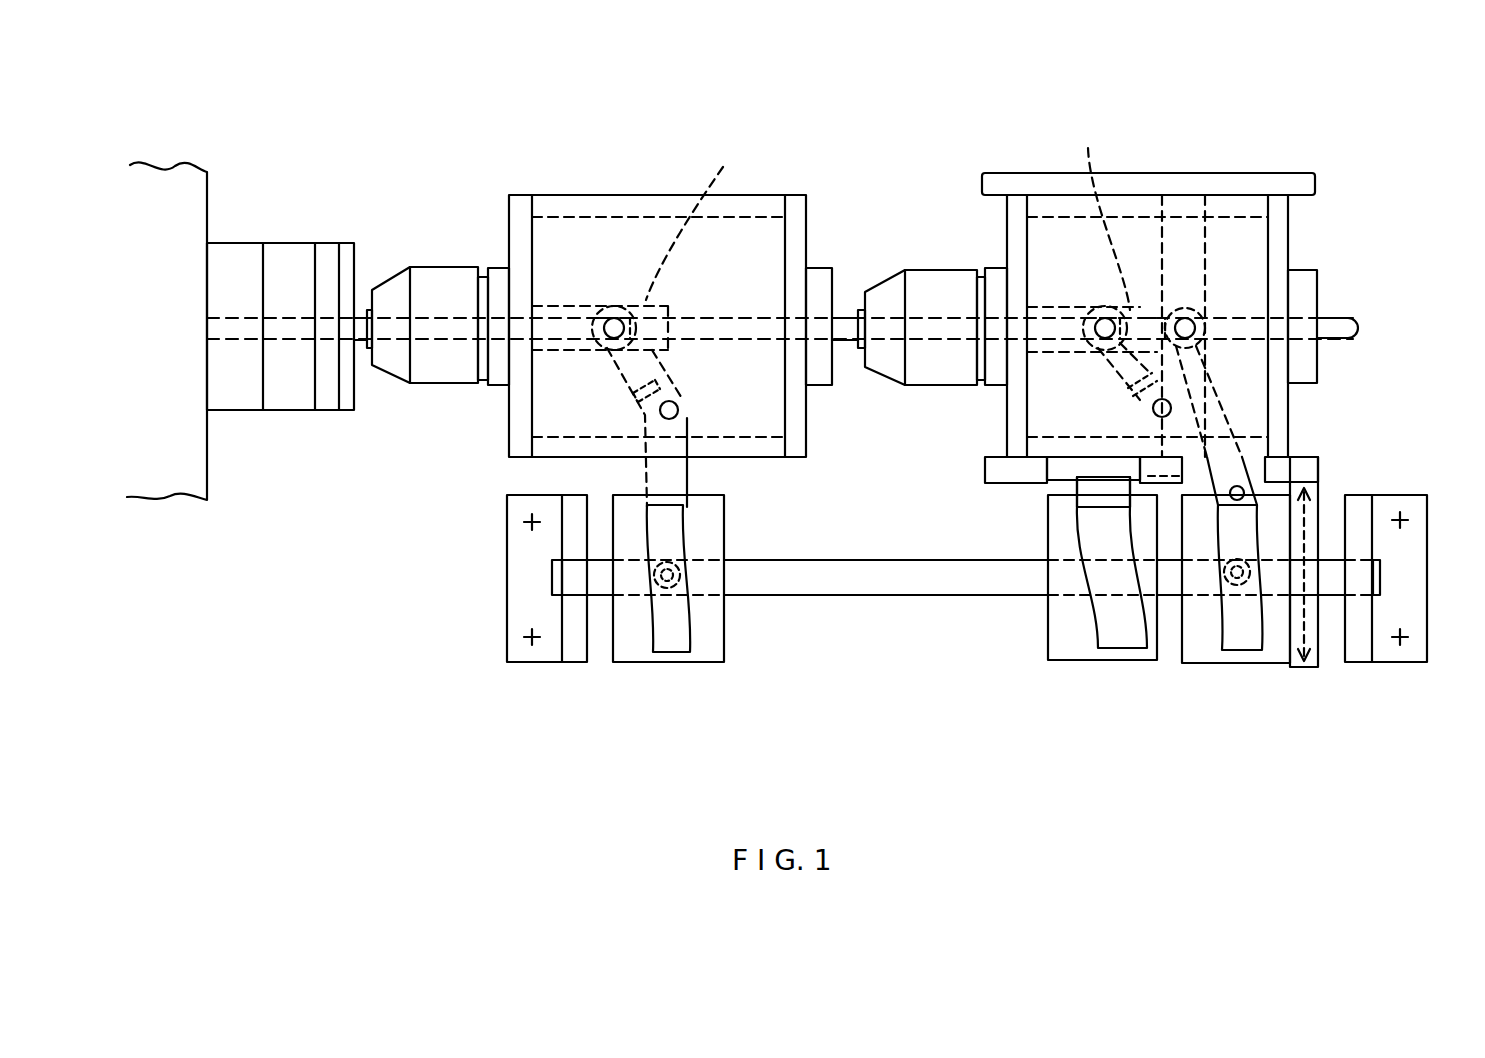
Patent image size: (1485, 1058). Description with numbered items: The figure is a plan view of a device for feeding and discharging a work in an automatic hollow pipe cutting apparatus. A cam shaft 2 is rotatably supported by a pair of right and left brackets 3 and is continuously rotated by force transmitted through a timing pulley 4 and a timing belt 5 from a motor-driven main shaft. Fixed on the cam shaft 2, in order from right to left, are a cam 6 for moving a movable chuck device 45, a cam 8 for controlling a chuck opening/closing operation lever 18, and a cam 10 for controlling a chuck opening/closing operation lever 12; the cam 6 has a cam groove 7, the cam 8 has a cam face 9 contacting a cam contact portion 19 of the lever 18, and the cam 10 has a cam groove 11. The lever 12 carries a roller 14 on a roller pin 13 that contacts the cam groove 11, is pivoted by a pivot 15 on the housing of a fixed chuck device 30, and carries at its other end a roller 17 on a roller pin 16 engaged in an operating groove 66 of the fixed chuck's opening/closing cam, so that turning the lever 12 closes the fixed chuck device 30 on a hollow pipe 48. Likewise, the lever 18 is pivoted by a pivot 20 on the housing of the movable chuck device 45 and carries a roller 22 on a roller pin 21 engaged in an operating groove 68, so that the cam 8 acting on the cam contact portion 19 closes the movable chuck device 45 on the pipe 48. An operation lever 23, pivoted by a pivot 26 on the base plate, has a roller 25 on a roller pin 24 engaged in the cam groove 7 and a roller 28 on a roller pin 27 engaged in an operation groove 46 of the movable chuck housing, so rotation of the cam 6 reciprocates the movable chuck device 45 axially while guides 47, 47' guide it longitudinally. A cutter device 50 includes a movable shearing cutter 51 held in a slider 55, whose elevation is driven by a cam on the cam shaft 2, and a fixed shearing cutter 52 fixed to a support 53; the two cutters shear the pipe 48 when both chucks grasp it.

The cam shaft 2 is at (1375, 585).
The brackets 3 is at (530, 655).
The timing pulley 4 is at (1320, 660).
The timing belt 5 is at (1310, 668).
The cam for moving the movable chuck device 6 is at (1278, 665).
The cam groove 7 is at (1232, 652).
The cam for controlling the chuck opening/closing operation lever 8 is at (1083, 665).
The cam face 9 is at (1145, 650).
The cam for controlling the chuck opening/closing operation lever 10 is at (712, 652).
The cam groove 11 is at (672, 655).
The chuck opening/closing operation lever 12 is at (687, 472).
The roller pin 13 is at (680, 570).
The roller 14 is at (675, 590).
The pivot 15 is at (680, 412).
The roller pin 16 is at (616, 318).
The roller 17 is at (632, 308).
The chuck opening/closing operation lever 18 is at (1145, 440).
The cam contact portion 19 is at (1083, 492).
The pivot 20 is at (1150, 410).
The roller pin 21 is at (1105, 315).
The roller 22 is at (1085, 310).
The operation lever for moving the movable chuck device 23 is at (1215, 413).
The roller pin 24 is at (1257, 568).
The roller 25 is at (1240, 540).
The pivot 26 is at (1292, 460).
The roller pin 27 is at (1183, 315).
The roller 28 is at (1170, 310).
The fixed chuck device 30 is at (442, 265).
The movable chuck device 45 is at (910, 265).
The operation groove 46 is at (1208, 246).
The guide 47 is at (1148, 148).
The guide 47' is at (963, 463).
The hollow pipe 48 is at (1330, 312).
The cutter device 50 is at (282, 233).
The movable shearing cutter 51 is at (235, 405).
The fixed shearing cutter 52 is at (295, 405).
The support 53 is at (330, 405).
The slider 55 is at (162, 345).
The operating groove 66 is at (693, 218).
The operating groove 68 is at (1099, 214).